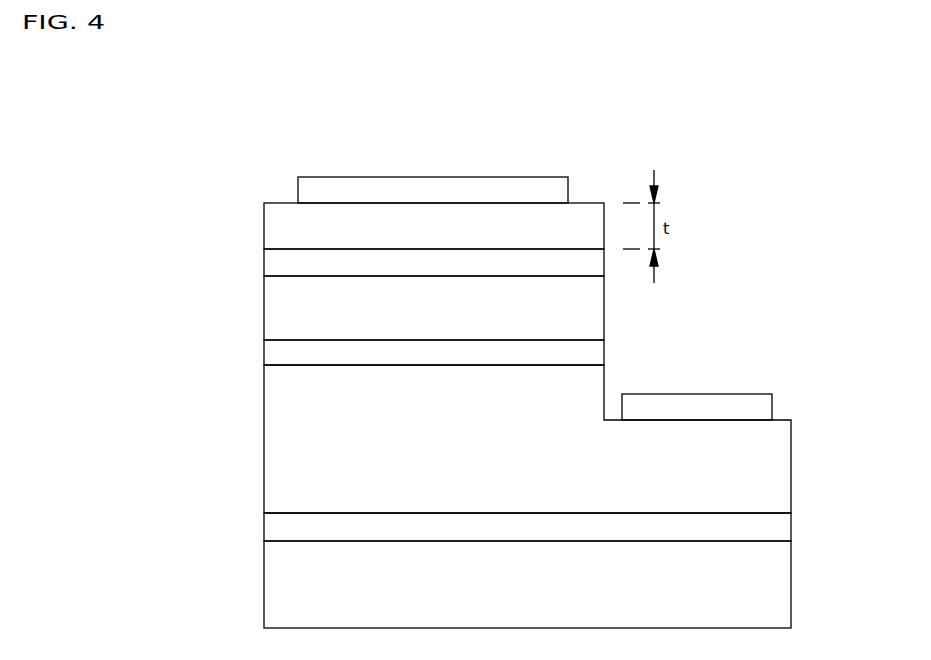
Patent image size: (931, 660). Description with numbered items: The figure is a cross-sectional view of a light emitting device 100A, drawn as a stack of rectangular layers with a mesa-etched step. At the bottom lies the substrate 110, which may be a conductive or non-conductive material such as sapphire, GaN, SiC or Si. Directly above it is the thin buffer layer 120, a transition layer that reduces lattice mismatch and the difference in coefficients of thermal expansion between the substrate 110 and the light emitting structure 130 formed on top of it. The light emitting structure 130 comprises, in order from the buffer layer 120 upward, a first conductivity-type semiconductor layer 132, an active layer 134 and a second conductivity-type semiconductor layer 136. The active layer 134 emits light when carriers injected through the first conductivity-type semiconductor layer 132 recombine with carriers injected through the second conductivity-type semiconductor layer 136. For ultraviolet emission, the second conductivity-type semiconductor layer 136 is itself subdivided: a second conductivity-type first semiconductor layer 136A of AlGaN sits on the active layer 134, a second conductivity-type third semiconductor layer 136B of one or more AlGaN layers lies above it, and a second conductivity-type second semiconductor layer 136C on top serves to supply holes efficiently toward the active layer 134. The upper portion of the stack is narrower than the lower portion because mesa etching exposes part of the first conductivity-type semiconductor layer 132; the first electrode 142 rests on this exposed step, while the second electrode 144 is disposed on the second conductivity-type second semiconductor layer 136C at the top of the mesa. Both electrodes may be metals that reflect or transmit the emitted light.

The light emitting device 100A is at (867, 164).
The substrate 110 is at (781, 584).
The buffer layer 120 is at (781, 529).
The light emitting structure 130 is at (100, 257).
The first conductivity-type semiconductor layer 132 is at (272, 434).
The active layer 134 is at (272, 348).
The second conductivity-type semiconductor layer 136 is at (160, 218).
The second conductivity-type first semiconductor layer 136A is at (272, 308).
The second conductivity-type third semiconductor layer 136B is at (272, 264).
The second conductivity-type second semiconductor layer 136C is at (272, 232).
The first electrode 142 is at (762, 408).
The second electrode 144 is at (305, 192).